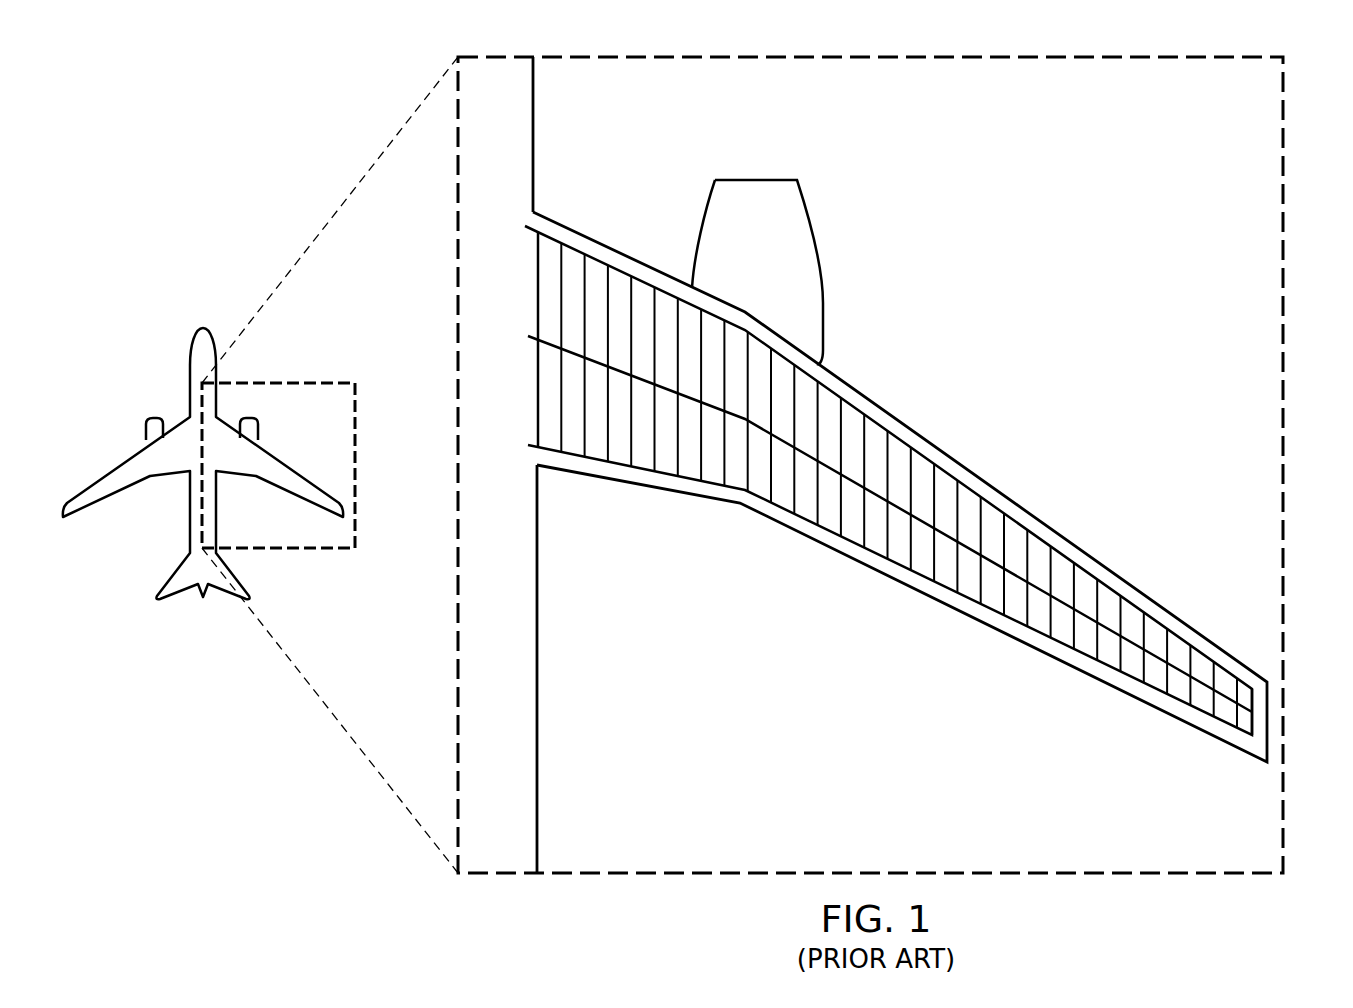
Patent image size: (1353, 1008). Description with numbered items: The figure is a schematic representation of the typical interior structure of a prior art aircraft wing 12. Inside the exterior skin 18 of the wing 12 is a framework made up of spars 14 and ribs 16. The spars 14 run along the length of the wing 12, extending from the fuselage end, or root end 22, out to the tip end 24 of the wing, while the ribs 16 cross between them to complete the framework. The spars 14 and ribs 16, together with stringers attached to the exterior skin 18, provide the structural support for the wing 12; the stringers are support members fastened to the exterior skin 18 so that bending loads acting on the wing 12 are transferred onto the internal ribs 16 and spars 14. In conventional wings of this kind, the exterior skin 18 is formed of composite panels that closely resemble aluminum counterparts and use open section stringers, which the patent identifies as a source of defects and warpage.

The aircraft wing 12 is at (993, 361).
The spars 14 is at (600, 258).
The ribs 16 is at (637, 447).
The exterior skin 18 is at (1025, 510).
The root end 22 is at (538, 285).
The tip end 24 is at (1252, 723).